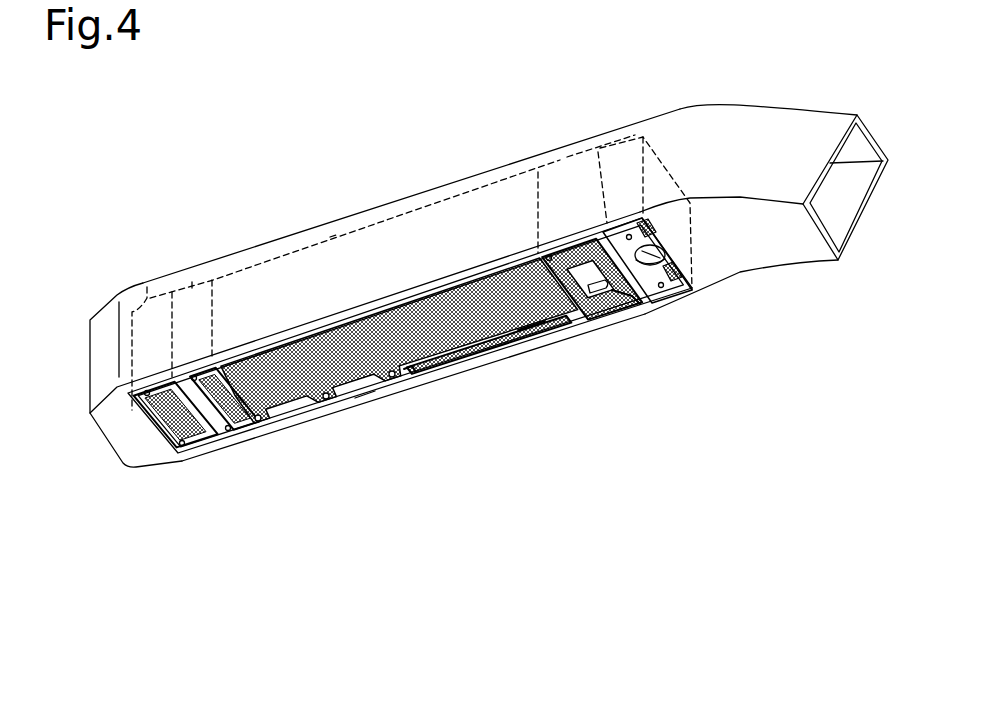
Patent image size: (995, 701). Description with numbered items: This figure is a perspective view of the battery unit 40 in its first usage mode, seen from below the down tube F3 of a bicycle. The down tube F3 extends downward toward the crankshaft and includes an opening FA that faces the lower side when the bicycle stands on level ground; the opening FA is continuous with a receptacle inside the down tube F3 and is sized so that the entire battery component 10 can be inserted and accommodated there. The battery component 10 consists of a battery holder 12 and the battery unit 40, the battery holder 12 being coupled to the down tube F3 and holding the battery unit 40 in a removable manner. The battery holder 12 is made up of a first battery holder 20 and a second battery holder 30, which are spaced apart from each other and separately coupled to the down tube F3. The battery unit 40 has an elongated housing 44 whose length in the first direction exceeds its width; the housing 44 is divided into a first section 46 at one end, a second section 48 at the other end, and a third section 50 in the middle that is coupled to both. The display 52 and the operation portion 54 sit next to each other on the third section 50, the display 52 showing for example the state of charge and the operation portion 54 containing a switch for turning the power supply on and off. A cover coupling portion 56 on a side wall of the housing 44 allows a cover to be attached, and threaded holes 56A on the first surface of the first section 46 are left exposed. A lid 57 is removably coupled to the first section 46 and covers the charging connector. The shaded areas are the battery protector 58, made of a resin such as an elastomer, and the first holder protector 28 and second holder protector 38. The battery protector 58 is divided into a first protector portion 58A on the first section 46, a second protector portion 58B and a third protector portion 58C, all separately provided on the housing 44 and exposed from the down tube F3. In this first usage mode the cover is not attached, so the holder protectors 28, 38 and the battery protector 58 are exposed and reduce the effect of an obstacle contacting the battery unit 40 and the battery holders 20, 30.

The battery component 10 is at (243, 555).
The battery holder 12 is at (451, 265).
The first battery holder 20 is at (643, 137).
The second battery holder 30 is at (147, 287).
The first holder protector 28 is at (665, 232).
The second holder protector 38 is at (173, 440).
The bicycle battery unit 40 is at (352, 537).
The housing 44 is at (477, 183).
The first section 46 is at (563, 157).
The second section 48 is at (192, 282).
The third section 50 is at (330, 237).
The display 52 is at (467, 362).
The operation portion 54 is at (534, 333).
The cover coupling portion 56 is at (399, 370).
The threaded holes 56A is at (330, 410).
The lid 57 is at (628, 300).
The battery protector 58 is at (442, 378).
The first protector portion 58A is at (588, 308).
The second protector portion 58B is at (243, 443).
The third protector portion 58C is at (413, 380).
The opening FA is at (365, 393).
The down tube F3 is at (723, 108).